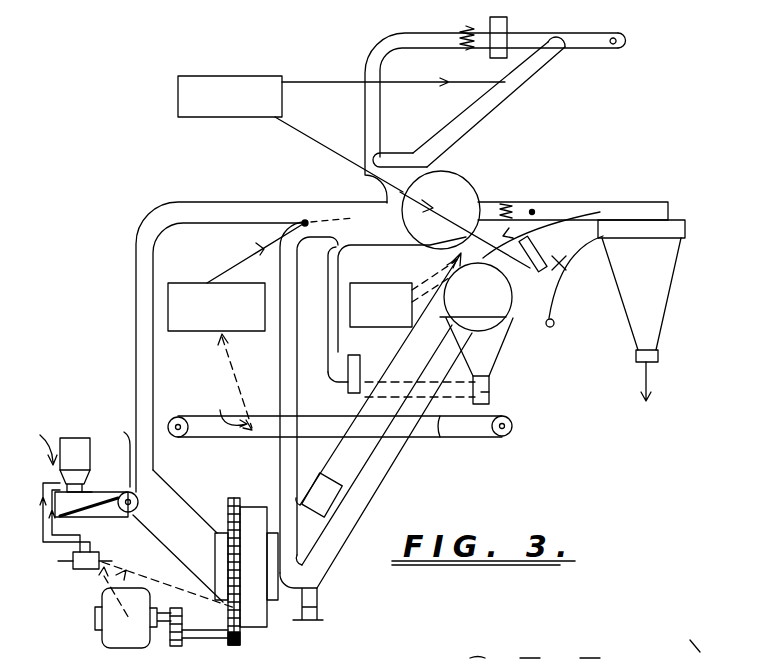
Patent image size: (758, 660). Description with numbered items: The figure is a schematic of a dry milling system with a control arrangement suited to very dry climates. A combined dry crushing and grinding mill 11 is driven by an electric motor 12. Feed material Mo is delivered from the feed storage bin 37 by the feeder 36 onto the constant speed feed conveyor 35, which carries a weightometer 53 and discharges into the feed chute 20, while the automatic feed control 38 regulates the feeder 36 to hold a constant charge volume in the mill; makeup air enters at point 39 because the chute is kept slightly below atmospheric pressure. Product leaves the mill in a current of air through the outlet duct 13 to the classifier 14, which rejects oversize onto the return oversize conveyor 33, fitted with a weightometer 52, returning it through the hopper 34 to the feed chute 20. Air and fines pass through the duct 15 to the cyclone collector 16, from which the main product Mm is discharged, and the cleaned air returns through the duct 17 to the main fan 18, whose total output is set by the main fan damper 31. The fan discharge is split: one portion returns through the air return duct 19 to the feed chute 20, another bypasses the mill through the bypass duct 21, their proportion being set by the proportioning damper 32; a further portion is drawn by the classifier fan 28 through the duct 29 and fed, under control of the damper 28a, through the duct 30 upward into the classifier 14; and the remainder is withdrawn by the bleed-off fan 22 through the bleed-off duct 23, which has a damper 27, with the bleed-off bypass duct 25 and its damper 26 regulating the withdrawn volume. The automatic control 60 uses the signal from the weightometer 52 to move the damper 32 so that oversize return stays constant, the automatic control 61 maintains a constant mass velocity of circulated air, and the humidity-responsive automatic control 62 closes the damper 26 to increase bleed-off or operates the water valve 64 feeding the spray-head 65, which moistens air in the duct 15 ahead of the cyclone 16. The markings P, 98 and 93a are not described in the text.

The automatic control 62 is at (236, 84).
The bleed-off duct 23 is at (363, 128).
The bleed-off bypass duct 25 is at (470, 128).
The damper 26 is at (516, 94).
The damper 27 is at (465, 26).
The bleed-off fan 22 is at (510, 22).
The main fan 18 is at (460, 186).
The proportioning damper 32 is at (318, 221).
The duct 17 is at (583, 202).
The main fan damper 31 is at (508, 203).
The paper position P is at (531, 238).
The collector 16 is at (630, 322).
The main product Mm is at (660, 393).
The duct 15 is at (560, 265).
The spray-head 65 is at (556, 276).
The water valve 64 is at (554, 327).
The classifier 14 is at (494, 330).
The duct 30 is at (455, 383).
The air return duct 19 is at (143, 265).
The automatic control 60 is at (210, 277).
The weightometer 52 is at (221, 382).
The bypass duct 21 is at (292, 352).
The duct 29 is at (330, 292).
The automatic control 61 is at (377, 290).
The classifier fan 28 is at (360, 366).
The damper 28a is at (356, 392).
The outlet duct 13 is at (372, 454).
The return oversize conveyor 33 is at (440, 447).
The hopper 34 is at (162, 450).
The feed chute 20 is at (162, 502).
The combined dry crushing and grinding mill 11 is at (250, 505).
The drive belt 98 is at (236, 645).
The feed storage bin 37 is at (76, 445).
The point 39 is at (111, 447).
The feed material Mo is at (35, 444).
The feeder 36 is at (86, 487).
The weightometer 53 is at (84, 517).
The feed conveyor 35 is at (112, 522).
The automatic feed control 38 is at (86, 575).
The electric motor 12 is at (120, 630).
The element 93a is at (492, 657).